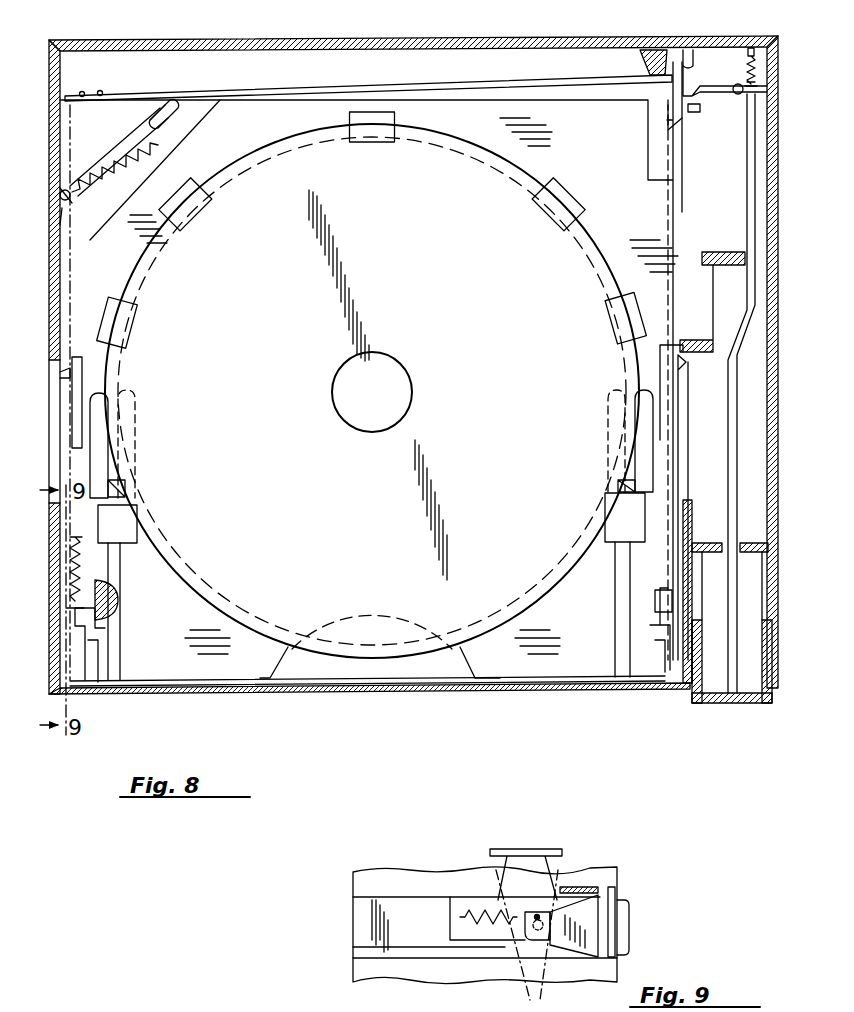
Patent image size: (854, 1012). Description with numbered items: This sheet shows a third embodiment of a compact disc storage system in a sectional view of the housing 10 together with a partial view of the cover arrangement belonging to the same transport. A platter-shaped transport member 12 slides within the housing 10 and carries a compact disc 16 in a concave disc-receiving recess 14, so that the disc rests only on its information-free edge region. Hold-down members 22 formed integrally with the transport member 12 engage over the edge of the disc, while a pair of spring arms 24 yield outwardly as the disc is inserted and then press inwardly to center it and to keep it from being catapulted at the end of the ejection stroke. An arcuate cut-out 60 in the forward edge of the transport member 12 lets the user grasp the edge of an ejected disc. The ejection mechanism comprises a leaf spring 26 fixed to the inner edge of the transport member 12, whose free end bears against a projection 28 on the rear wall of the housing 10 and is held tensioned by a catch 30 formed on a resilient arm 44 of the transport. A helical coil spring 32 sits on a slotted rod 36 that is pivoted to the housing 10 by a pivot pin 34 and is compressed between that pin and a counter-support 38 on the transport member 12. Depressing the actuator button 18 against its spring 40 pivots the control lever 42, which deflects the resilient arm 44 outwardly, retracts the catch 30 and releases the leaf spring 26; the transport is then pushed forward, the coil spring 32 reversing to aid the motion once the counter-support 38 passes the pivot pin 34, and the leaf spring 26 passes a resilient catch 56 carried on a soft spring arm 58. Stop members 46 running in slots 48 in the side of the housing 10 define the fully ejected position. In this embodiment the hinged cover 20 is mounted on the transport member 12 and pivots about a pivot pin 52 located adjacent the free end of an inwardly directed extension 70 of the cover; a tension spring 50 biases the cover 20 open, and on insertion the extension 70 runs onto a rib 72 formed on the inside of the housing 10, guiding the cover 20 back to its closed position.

In FIG. 8, the housing 10 is at (183, 40).
In FIG. 9, the housing 10 is at (624, 866).
In FIG. 8, the transport member 12 is at (258, 110).
In FIG. 9, the transport member 12 is at (365, 905).
In FIG. 8, the disc-receiving recess 14 is at (162, 678).
In FIG. 8, the compact disc 16 is at (363, 650).
In FIG. 8, the actuator button 18 is at (720, 704).
In FIG. 9, the actuator button 18 is at (630, 940).
In FIG. 8, the cover 20 is at (244, 688).
In FIG. 9, the cover 20 is at (518, 848).
In FIG. 8, the hold-down member 22 is at (372, 142).
In FIG. 8, the spring arm 24 is at (116, 476).
In FIG. 8, the leaf spring 26 is at (500, 84).
In FIG. 8, the projection 28 is at (640, 60).
In FIG. 8, the catch 30 is at (672, 50).
In FIG. 8, the helical coil spring 32 is at (128, 140).
In FIG. 8, the pivot pin 34 is at (72, 200).
In FIG. 8, the slotted rod 36 is at (178, 103).
In FIG. 8, the counter-support 38 is at (158, 108).
In FIG. 8, the spring 40 is at (747, 48).
In FIG. 8, the control lever 42 is at (715, 80).
In FIG. 8, the resilient arm 44 is at (673, 170).
In FIG. 8, the stop member 46 is at (680, 372).
In FIG. 8, the slot 48 is at (690, 418).
In FIG. 8, the tension spring 50 is at (96, 576).
In FIG. 9, the tension spring 50 is at (460, 910).
In FIG. 8, the pivot pin 52 is at (116, 604).
In FIG. 9, the pivot pin 52 is at (537, 942).
In FIG. 8, the resilient catch 56 is at (668, 128).
In FIG. 8, the spring arm 58 is at (688, 107).
In FIG. 8, the arcuate cut-out 60 is at (462, 650).
In FIG. 8, the extension 70 is at (80, 637).
In FIG. 9, the extension 70 is at (590, 955).
In FIG. 8, the rib 72 is at (96, 690).
In FIG. 9, the rib 72 is at (588, 887).